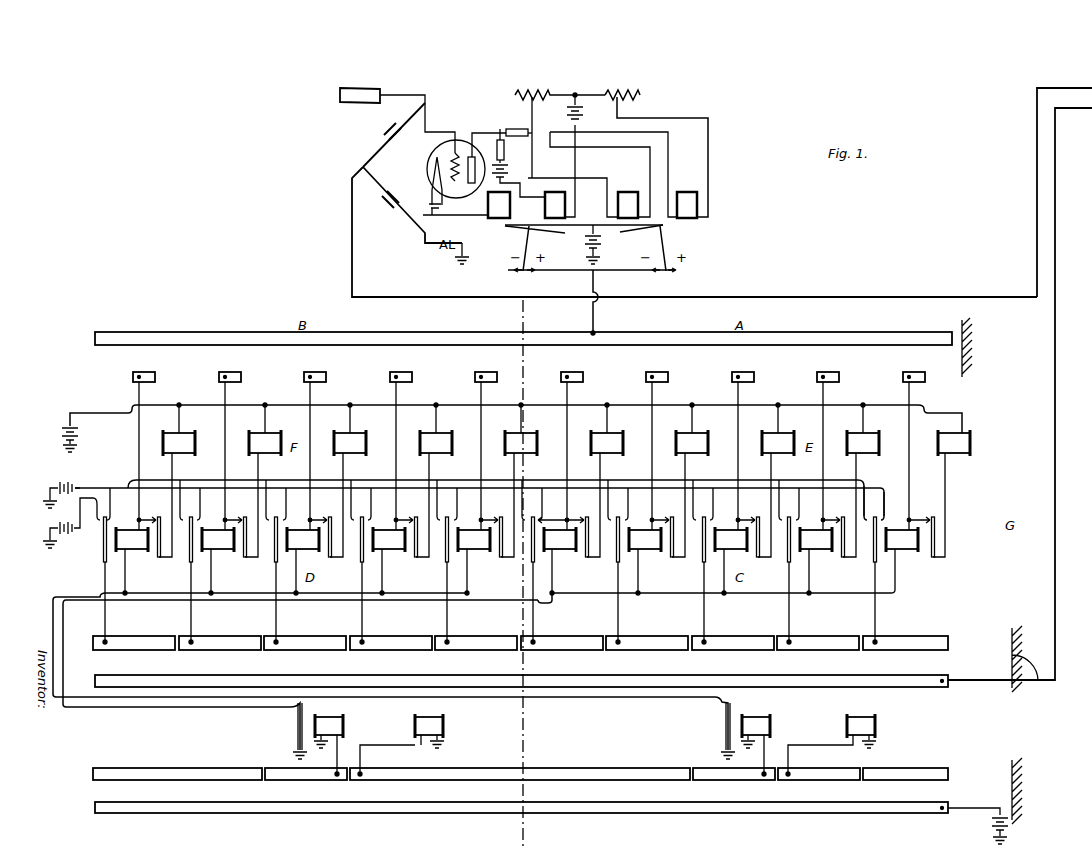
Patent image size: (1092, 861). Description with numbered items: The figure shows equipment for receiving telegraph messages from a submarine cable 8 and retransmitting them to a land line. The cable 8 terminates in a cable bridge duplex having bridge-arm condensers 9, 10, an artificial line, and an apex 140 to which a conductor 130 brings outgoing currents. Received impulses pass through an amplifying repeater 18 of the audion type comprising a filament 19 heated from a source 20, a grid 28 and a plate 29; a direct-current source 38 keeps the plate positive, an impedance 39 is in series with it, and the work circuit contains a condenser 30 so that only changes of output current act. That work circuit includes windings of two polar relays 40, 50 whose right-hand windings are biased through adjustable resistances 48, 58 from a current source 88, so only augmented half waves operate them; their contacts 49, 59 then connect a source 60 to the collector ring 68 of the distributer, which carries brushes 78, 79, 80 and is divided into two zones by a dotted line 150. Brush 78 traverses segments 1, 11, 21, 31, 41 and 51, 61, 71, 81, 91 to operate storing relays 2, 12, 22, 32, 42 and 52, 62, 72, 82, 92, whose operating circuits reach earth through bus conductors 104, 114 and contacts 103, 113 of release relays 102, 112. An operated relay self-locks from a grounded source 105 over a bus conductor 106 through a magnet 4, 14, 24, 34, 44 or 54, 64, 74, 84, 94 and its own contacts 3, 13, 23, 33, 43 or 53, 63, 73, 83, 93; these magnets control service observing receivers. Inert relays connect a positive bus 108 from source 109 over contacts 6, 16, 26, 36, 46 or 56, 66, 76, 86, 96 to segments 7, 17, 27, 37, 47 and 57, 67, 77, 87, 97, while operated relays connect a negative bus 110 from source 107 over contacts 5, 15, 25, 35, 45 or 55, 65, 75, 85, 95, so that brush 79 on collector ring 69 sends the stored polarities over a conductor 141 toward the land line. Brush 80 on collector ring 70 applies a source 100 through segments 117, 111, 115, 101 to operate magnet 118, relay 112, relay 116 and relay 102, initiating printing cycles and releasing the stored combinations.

The submarine cable 8 is at (360, 93).
The bridge-arm condenser 9 is at (394, 135).
The bridge-arm condenser 10 is at (385, 207).
The apex of the cable duplex 140 is at (362, 166).
The amplifying repeater 18 is at (455, 141).
The thermionic cathode or filament 19 is at (416, 176).
The source of heating current 20 is at (455, 207).
The input electrode or grid 28 is at (428, 150).
The output electrode or plate 29 is at (473, 139).
The condenser 30 is at (516, 124).
The impedance 39 is at (512, 149).
The source of direct current 38 is at (518, 179).
The polar relay 40 is at (582, 158).
The adjustable resistance 48 is at (560, 87).
The adjustable resistance 58 is at (622, 80).
The source of current 88 is at (576, 116).
The polar relay 50 is at (657, 205).
The source of current 60 is at (600, 247).
The contacts of relay 40 49 is at (526, 271).
The contacts of relay 50 59 is at (663, 271).
The collector ring 68 is at (635, 339).
The conductor 130 is at (1041, 88).
The conductor 141 is at (1057, 135).
The contactor brush 78 is at (971, 357).
The dotted line 150 is at (523, 736).
The segment 91 is at (144, 374).
The segment 81 is at (230, 374).
The segment 71 is at (315, 374).
The segment 61 is at (401, 374).
The segment 51 is at (486, 374).
The segment 41 is at (572, 374).
The segment 31 is at (657, 374).
The segment 21 is at (743, 374).
The segment 11 is at (828, 374).
The segment 1 is at (912, 374).
The bus conductor 106 is at (482, 408).
The source of grounded current 105 is at (60, 433).
The positively poled grounded current source 109 is at (53, 482).
The negatively poled grounded current source 107 is at (52, 530).
The current bus 108 is at (479, 491).
The negatively poled current bus 110 is at (497, 476).
The selecting magnet 94 is at (177, 480).
The selecting magnet 84 is at (263, 480).
The selecting magnet 74 is at (348, 480).
The selecting magnet 64 is at (434, 480).
The selecting magnet 54 is at (519, 480).
The selecting magnet 44 is at (605, 480).
The selecting magnet 34 is at (690, 480).
The selecting magnet 24 is at (776, 480).
The selecting magnet 14 is at (861, 480).
The selecting magnet 4 is at (951, 493).
The contact spring 96 is at (96, 492).
The contacts of relay 92 95 is at (113, 493).
The contact spring 86 is at (181, 491).
The contacts of relay 82 85 is at (204, 491).
The contact spring 76 is at (267, 491).
The contacts of relay 72 75 is at (290, 491).
The contact spring 66 is at (352, 491).
The contacts of relay 62 65 is at (375, 491).
The contact spring 56 is at (438, 491).
The contacts of relay 52 55 is at (461, 491).
The contacts of relay 42 46 is at (528, 491).
The contacts of relay 32 36 is at (609, 491).
The contact spring 35 is at (632, 491).
The contacts of relay 22 26 is at (694, 491).
The contact spring 25 is at (717, 491).
The contacts of relay 12 16 is at (780, 491).
The contact spring 15 is at (803, 491).
The contacts of relay 2 6 is at (870, 489).
The contacts of relay 2 5 is at (889, 489).
The self-locking contacts of relay 92 93 is at (148, 512).
The self-locking contacts of relay 82 83 is at (234, 512).
The self-locking contacts of relay 72 73 is at (319, 512).
The self-locking contacts of relay 62 63 is at (405, 512).
The self-locking contacts of relay 52 53 is at (490, 512).
The armature 45 is at (552, 512).
The armature 43 is at (576, 512).
The armature 33 is at (661, 512).
The armature 23 is at (747, 512).
The armature 13 is at (832, 512).
The armature 3 is at (918, 512).
The storing relay 92 is at (132, 561).
The storing relay 82 is at (218, 561).
The storing relay 72 is at (303, 561).
The storing relay 62 is at (389, 561).
The storing relay 52 is at (474, 561).
The storing relay 42 is at (560, 561).
The storing relay 32 is at (645, 561).
The storing relay 22 is at (731, 561).
The storing relay 12 is at (816, 561).
The storing relay 2 is at (902, 560).
The bus conductor 114 is at (86, 591).
The bus conductor 104 is at (88, 613).
The contacts of relay 112 113 is at (720, 718).
The contacts of relay 102 103 is at (292, 719).
The segment 97 is at (140, 640).
The segment 87 is at (225, 640).
The segment 77 is at (311, 640).
The segment 67 is at (396, 640).
The segment 57 is at (482, 640).
The segment 47 is at (567, 640).
The segment 37 is at (653, 640).
The segment 27 is at (738, 640).
The segment 17 is at (824, 640).
The segment 7 is at (901, 640).
The collector ring 69 is at (586, 678).
The contactor brush 79 is at (1038, 682).
The collector ring 70 is at (587, 804).
The contactor brush 80 is at (1012, 790).
The source of current 100 is at (992, 830).
The segment 101 is at (319, 778).
The segment 115 is at (399, 778).
The segment 111 is at (741, 778).
The segment 117 is at (831, 778).
The release relay 102 is at (328, 721).
The printing cycle control relay 116 is at (428, 715).
The lock release relay 112 is at (754, 721).
The magnet 118 is at (858, 721).